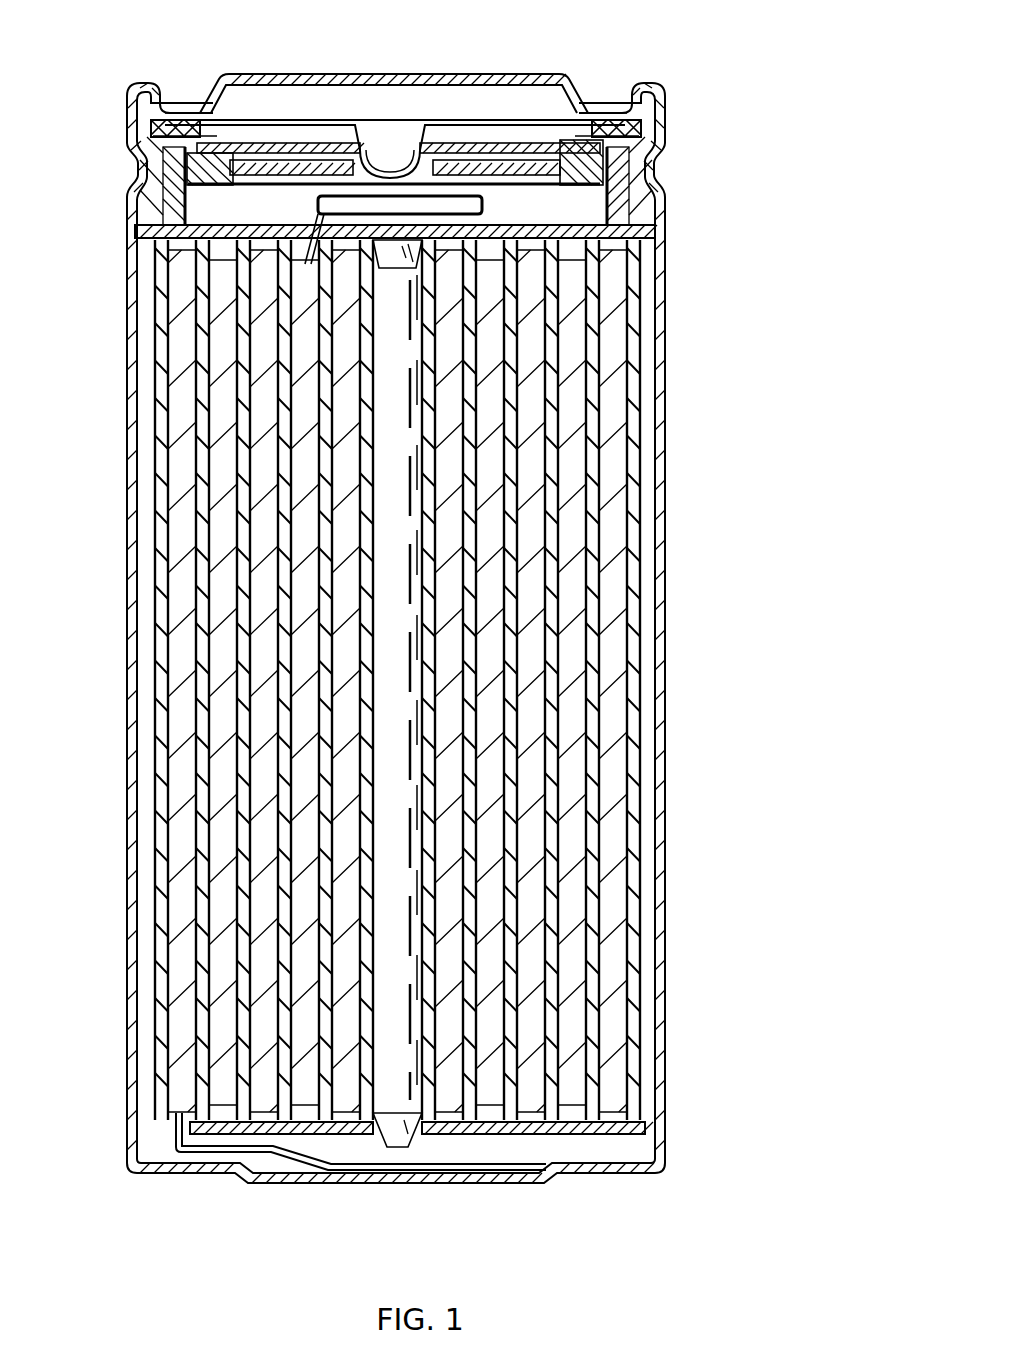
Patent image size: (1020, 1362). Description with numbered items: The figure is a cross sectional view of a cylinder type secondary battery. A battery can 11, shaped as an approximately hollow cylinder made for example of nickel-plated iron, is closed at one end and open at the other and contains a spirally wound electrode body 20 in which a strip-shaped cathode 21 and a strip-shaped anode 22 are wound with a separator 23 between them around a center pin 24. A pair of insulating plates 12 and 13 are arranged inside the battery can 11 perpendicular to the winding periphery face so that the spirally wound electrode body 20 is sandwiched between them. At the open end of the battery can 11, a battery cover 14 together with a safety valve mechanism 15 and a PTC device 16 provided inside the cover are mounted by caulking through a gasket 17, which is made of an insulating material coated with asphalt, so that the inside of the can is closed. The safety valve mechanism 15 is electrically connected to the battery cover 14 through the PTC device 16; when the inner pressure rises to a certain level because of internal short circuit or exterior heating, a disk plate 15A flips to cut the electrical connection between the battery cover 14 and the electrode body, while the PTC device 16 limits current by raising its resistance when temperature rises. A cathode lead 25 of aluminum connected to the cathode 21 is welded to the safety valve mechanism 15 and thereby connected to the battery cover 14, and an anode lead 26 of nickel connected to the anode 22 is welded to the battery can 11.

The battery can 11 is at (665, 305).
The insulating plate 12 is at (657, 233).
The insulating plate 13 is at (657, 1130).
The battery cover 14 is at (366, 74).
The safety valve mechanism 15 is at (527, 145).
The disk plate 15A is at (483, 143).
The PTC device 16 is at (667, 130).
The gasket 17 is at (660, 195).
The spirally wound electrode body 20 is at (445, 693).
The cathode 21 is at (577, 512).
The anode 22 is at (612, 573).
The separator 23 is at (590, 648).
The center pin 24 is at (387, 695).
The cathode lead 25 is at (365, 172).
The anode lead 26 is at (283, 1154).